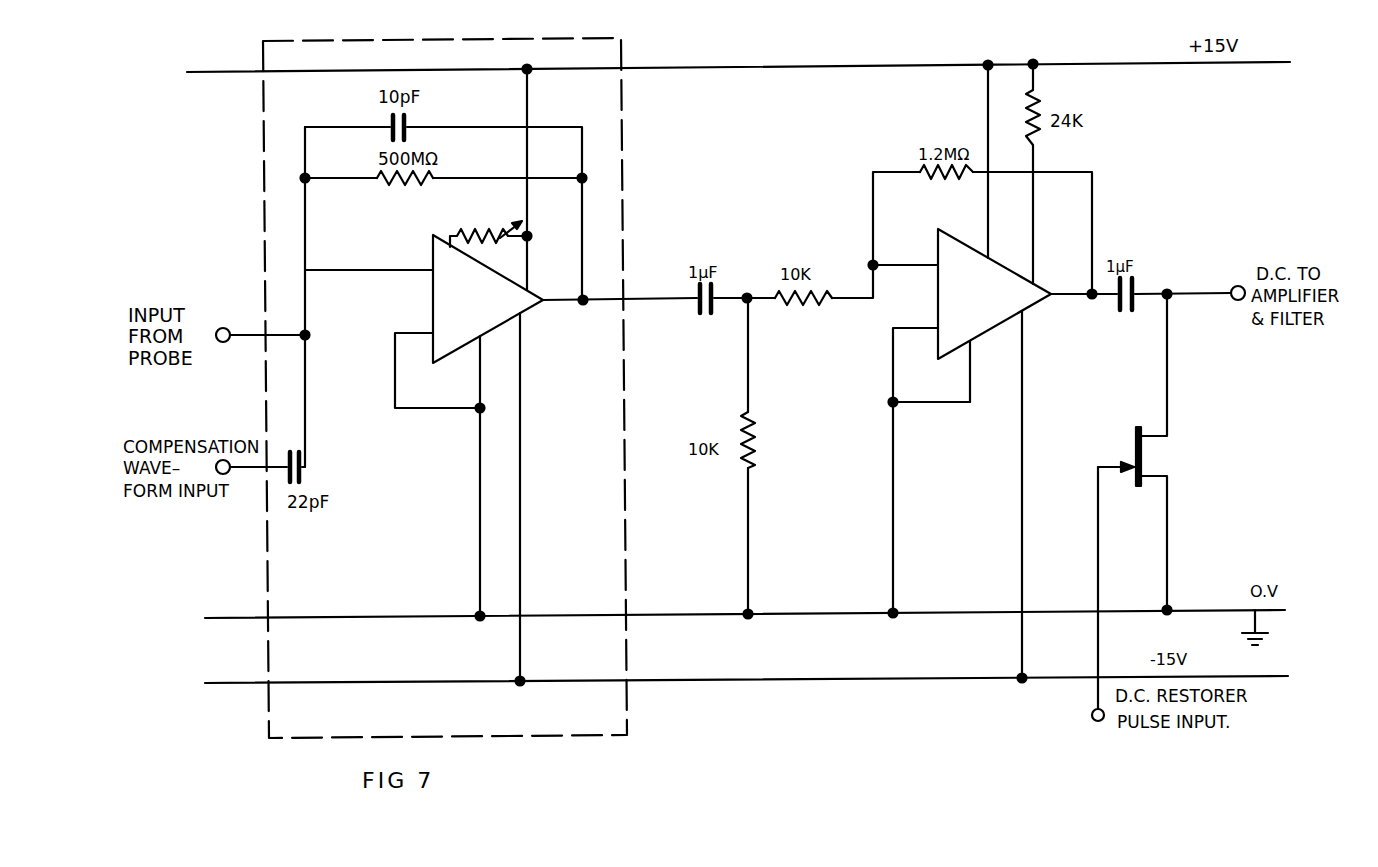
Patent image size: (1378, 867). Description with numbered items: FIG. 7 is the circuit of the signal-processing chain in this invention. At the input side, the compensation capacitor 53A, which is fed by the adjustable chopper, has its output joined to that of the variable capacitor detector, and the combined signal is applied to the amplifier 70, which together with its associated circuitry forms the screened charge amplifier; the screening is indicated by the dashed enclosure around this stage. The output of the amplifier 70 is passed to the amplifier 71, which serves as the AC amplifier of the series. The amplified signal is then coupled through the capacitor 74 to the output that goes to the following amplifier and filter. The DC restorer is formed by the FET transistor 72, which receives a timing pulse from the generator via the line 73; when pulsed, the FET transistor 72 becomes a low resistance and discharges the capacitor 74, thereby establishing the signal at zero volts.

The compensation capacitor 53A is at (307, 455).
The amplifier 70 is at (546, 373).
The amplifier 71 is at (993, 369).
The FET transistor 72 is at (1134, 441).
The line 73 is at (1098, 570).
The capacitor 74 is at (1137, 286).